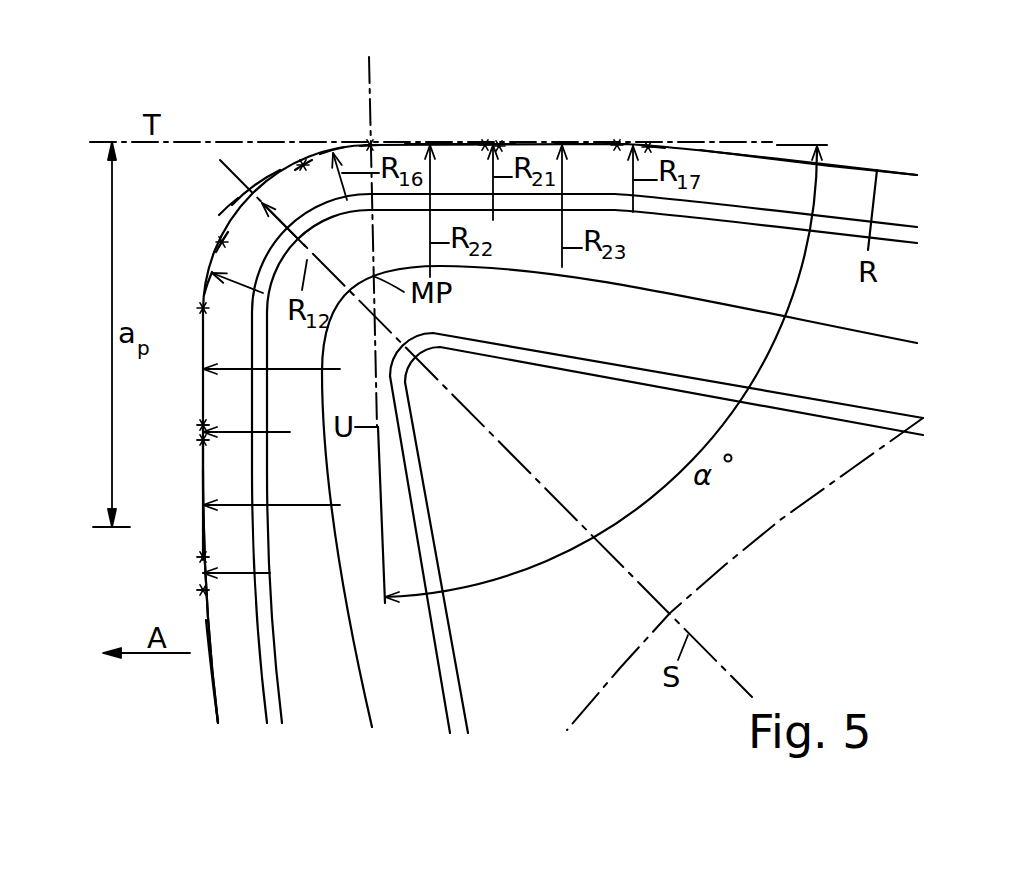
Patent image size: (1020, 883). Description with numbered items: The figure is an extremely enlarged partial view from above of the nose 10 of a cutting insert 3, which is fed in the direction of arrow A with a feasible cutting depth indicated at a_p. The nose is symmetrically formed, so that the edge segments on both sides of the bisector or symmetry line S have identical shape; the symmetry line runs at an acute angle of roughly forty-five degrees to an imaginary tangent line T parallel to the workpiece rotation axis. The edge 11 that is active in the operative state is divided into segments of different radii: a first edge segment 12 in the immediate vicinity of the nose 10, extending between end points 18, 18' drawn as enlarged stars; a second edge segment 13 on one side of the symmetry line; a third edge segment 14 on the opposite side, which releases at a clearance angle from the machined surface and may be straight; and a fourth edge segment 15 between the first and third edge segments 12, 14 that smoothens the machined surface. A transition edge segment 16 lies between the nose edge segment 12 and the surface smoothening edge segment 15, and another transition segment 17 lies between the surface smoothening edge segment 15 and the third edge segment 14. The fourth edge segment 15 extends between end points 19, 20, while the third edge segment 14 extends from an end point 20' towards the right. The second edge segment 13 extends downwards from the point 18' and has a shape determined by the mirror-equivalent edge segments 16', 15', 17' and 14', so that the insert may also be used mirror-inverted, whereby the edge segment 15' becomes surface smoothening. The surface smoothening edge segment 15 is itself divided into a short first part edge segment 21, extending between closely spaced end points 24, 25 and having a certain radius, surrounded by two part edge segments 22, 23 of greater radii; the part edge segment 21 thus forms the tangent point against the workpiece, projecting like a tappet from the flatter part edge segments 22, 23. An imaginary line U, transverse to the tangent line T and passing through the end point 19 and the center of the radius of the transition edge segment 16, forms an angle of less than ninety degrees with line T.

The cutting insert 3 is at (233, 703).
The nose 10 is at (222, 195).
The edge 11 is at (786, 148).
The first edge segment 12 is at (262, 196).
The second edge segment 13 is at (187, 460).
The third edge segment 14 is at (873, 133).
The edge segment 14' is at (184, 671).
The fourth edge segment 15 is at (446, 75).
The edge segment 15' is at (169, 411).
The transition edge segment 16 is at (321, 117).
The edge segment 16' is at (177, 277).
The transition segment 17 is at (660, 102).
The edge segment 17' is at (164, 577).
The end point 18 is at (286, 125).
The end point 18' is at (185, 226).
The end point 19 is at (375, 140).
The end point 20 is at (621, 106).
The end point 20' is at (692, 103).
The first part edge segment 21 is at (493, 140).
The second part edge segment 22 is at (418, 142).
The third part edge segment 23 is at (575, 137).
The end point 24 is at (480, 138).
The end point 25 is at (503, 143).